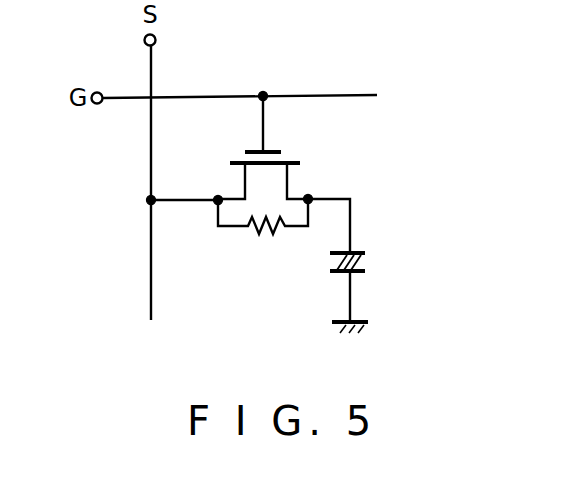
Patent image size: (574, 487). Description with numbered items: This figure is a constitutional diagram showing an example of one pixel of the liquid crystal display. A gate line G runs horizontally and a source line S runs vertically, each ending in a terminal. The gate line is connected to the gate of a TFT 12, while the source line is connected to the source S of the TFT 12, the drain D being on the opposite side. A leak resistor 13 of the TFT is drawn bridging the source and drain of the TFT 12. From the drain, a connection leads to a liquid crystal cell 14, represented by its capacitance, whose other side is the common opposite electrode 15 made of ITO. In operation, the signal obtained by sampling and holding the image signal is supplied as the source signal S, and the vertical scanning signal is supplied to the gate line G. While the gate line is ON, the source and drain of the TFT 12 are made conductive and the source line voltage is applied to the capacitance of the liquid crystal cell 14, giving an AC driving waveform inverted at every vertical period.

The TFT 12 is at (290, 150).
The leak resistor 13 is at (262, 232).
The liquid crystal cell 14 is at (366, 262).
The common opposite electrode 15 is at (366, 317).